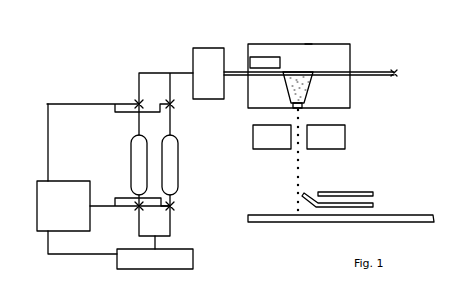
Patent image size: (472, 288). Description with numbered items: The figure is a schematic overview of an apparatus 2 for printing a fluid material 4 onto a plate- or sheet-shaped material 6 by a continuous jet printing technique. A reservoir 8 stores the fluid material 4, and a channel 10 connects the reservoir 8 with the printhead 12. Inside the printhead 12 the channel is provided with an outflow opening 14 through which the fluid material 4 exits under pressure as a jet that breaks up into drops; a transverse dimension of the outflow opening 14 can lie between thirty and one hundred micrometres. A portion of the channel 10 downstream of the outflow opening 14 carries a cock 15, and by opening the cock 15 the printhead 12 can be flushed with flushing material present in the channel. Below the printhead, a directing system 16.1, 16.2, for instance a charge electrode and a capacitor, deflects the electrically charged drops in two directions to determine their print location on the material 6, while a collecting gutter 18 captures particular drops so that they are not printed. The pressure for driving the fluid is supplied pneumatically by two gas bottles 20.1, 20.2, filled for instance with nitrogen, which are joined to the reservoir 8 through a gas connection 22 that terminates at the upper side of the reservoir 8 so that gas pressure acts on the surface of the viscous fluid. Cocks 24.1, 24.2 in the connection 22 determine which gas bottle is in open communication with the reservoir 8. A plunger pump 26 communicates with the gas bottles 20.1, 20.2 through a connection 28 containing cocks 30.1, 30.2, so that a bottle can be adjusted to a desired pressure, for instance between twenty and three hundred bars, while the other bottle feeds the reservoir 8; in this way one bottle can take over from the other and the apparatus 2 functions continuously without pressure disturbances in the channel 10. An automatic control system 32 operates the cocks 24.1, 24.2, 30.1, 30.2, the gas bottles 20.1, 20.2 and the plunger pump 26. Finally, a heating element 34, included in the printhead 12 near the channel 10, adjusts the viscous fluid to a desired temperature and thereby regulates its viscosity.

The apparatus 2 is at (350, 38).
The fluid material 4 is at (310, 92).
The plate- or sheet-shaped material 6 is at (425, 223).
The reservoir 8 is at (203, 48).
The channel 10 is at (235, 70).
The printhead 12 is at (308, 44).
The outflow opening 14 is at (303, 108).
The cock 15 is at (396, 72).
The directing system 16.1 is at (253, 138).
The directing system 16.2 is at (345, 136).
The collecting gutter 18 is at (380, 199).
The gas bottle 20.1 is at (132, 154).
The gas bottle 20.2 is at (178, 167).
The gas connection 22 is at (165, 72).
The cock 24.1 is at (137, 102).
The cock 24.2 is at (168, 102).
The plunger pump 26 is at (193, 258).
The connection 28 is at (152, 243).
The cock 30.1 is at (141, 208).
The cock 30.2 is at (172, 208).
The automatic control system 32 is at (46, 191).
The heating element 34 is at (263, 62).